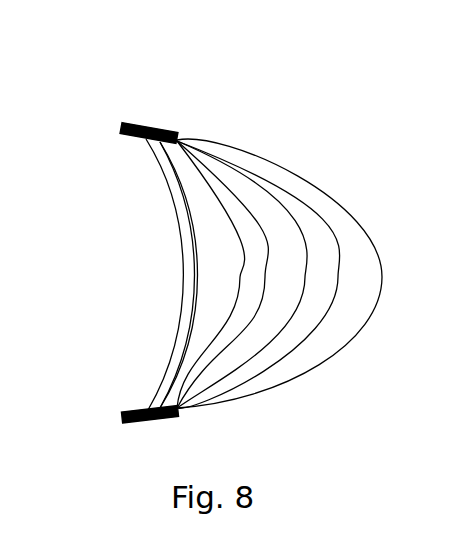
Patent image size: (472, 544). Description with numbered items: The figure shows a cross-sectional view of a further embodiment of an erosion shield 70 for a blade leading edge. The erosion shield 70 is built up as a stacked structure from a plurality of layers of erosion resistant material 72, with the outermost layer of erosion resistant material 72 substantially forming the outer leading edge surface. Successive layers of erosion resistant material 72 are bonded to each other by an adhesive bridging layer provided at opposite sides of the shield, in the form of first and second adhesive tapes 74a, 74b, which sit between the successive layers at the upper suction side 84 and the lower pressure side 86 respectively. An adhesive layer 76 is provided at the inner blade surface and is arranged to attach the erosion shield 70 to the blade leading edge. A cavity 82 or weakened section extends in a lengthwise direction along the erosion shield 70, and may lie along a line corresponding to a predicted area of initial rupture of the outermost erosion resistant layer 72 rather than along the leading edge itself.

The erosion shield 70 is at (310, 119).
The layers of erosion resistant material 72 is at (217, 230).
The first adhesive tape 74a is at (141, 124).
The second adhesive tape 74b is at (132, 424).
The adhesive layer 76 is at (195, 270).
The cavity 82 is at (308, 302).
The upper suction side 84 is at (169, 101).
The lower pressure side 86 is at (111, 391).